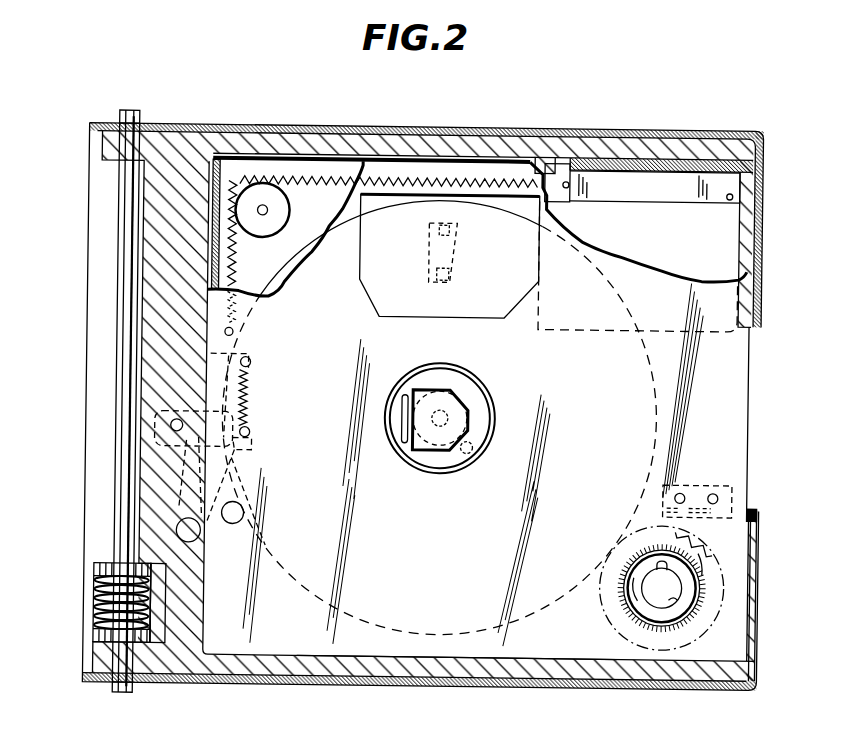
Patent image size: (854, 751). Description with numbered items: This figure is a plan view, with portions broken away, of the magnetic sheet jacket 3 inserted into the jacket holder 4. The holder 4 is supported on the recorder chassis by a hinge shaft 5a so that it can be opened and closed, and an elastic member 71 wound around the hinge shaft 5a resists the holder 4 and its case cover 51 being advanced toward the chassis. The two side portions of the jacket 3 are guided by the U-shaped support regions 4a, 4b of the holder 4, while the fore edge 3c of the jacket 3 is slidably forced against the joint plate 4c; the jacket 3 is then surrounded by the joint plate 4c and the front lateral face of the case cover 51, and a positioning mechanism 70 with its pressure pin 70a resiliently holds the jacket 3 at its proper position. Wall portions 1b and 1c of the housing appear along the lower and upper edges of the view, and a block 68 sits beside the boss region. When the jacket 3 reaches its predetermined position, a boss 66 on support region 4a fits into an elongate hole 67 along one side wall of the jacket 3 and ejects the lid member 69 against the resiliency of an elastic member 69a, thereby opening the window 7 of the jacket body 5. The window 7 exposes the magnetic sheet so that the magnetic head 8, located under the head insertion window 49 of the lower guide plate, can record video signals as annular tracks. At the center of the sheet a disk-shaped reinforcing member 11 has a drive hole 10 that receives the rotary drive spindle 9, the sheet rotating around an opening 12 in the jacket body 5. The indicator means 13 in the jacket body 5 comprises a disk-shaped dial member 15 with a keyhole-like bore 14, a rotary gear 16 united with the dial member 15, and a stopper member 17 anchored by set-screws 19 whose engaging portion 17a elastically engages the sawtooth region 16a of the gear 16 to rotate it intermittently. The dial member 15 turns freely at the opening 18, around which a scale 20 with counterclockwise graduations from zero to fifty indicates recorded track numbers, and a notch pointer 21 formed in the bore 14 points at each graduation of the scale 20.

The bottom wall of housing 1b is at (473, 680).
The top wall portion of housing 1c is at (600, 160).
The magnetic sheet jacket 3 is at (750, 399).
The fore edge 3c is at (213, 437).
The jacket holder 4 is at (646, 131).
The support region 4a is at (678, 148).
The support region 4b is at (416, 684).
The joint plate 4c is at (173, 343).
The jacket body 5 is at (737, 436).
The hinge shaft 5a is at (136, 285).
The window 7 is at (507, 318).
The magnetic head 8 is at (440, 281).
The rotary drive spindle 9 is at (415, 451).
The drive hole 10 is at (464, 418).
The reinforcing member 11 is at (452, 456).
The opening 12 is at (472, 452).
The indicator means 13 is at (606, 618).
The keyhole-like bore 14 is at (673, 600).
The dial member 15 is at (655, 612).
The rotary gear 16 is at (719, 619).
The sawtooth region 16a is at (695, 640).
The stopper member 17 is at (759, 511).
The engaging portion 17a is at (662, 524).
The opening 18 is at (632, 610).
The set-screws 19 is at (713, 489).
The scale 20 is at (722, 559).
The notch pointer 21 is at (660, 560).
The head insertion window 49 is at (440, 222).
The case cover 51 is at (713, 138).
The boss 66 is at (538, 168).
The elongate hole 67 is at (260, 157).
The stop block 68 is at (560, 162).
The lid member 69 is at (720, 328).
The elastic member 69a is at (332, 187).
The positioning mechanism 70 is at (180, 483).
The pressure pin 70a is at (234, 527).
The elastic member 71 is at (96, 608).